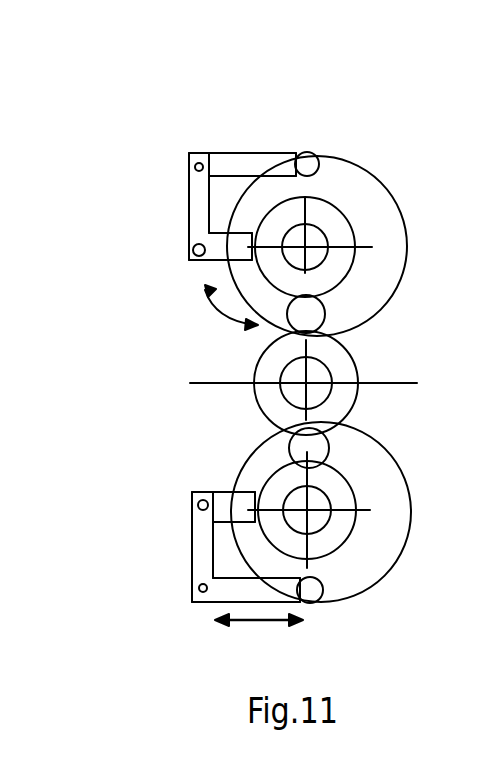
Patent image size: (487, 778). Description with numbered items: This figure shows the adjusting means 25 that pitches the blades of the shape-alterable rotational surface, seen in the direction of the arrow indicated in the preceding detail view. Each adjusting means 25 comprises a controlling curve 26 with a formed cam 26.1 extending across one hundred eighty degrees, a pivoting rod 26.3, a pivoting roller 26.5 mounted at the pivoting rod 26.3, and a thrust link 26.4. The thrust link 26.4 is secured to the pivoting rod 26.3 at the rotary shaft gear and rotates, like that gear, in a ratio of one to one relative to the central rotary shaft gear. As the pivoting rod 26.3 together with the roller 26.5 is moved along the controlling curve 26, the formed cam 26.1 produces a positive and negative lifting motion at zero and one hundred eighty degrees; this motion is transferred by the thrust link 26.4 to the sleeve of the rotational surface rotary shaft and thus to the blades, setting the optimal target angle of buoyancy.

The adjusting means 25 is at (225, 160).
The controlling curve 26 is at (387, 247).
The formed cam 26.1 is at (378, 297).
The pivoting rod 26.3 is at (243, 158).
The thrust link 26.4 is at (198, 203).
The pivoting roller 26.5 is at (309, 162).